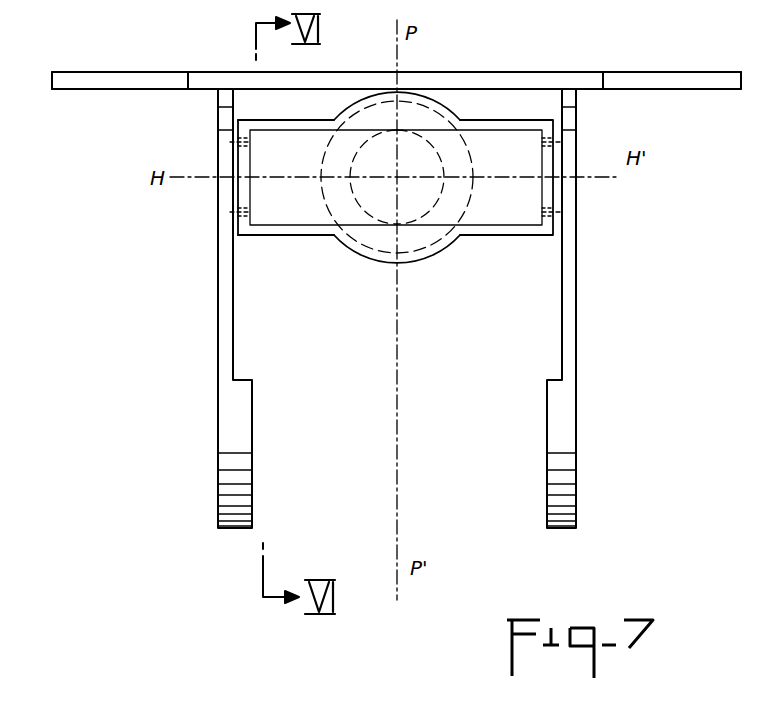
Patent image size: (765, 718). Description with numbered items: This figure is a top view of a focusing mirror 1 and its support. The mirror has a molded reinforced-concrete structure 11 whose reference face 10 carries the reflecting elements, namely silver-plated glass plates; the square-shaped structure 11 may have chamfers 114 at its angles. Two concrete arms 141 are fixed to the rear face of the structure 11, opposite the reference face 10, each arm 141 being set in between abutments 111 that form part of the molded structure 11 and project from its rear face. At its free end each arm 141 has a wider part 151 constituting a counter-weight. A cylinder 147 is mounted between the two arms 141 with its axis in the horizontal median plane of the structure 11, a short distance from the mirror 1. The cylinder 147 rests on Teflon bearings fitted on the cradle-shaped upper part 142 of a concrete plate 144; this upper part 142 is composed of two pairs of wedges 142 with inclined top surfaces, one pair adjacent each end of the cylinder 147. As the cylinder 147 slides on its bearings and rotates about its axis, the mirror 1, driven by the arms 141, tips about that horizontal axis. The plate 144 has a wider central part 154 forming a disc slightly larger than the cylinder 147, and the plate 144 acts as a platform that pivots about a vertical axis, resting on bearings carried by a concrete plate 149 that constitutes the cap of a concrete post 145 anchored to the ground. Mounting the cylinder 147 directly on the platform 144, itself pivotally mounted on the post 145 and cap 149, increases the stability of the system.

The mirror 1 is at (566, 64).
The reference face 10 is at (507, 72).
The structure 11 is at (95, 89).
The chamfers 114 is at (151, 72).
The abutments 111 is at (222, 98).
The arms 141 is at (218, 342).
The upper part (wedges) 142 is at (240, 143).
The concrete plate 144 is at (281, 236).
The concrete post 145 is at (452, 193).
The cylinder 147 is at (510, 236).
The concrete plate (cap) 149 is at (325, 193).
The wider part 151 is at (232, 484).
The central part 154 is at (410, 264).